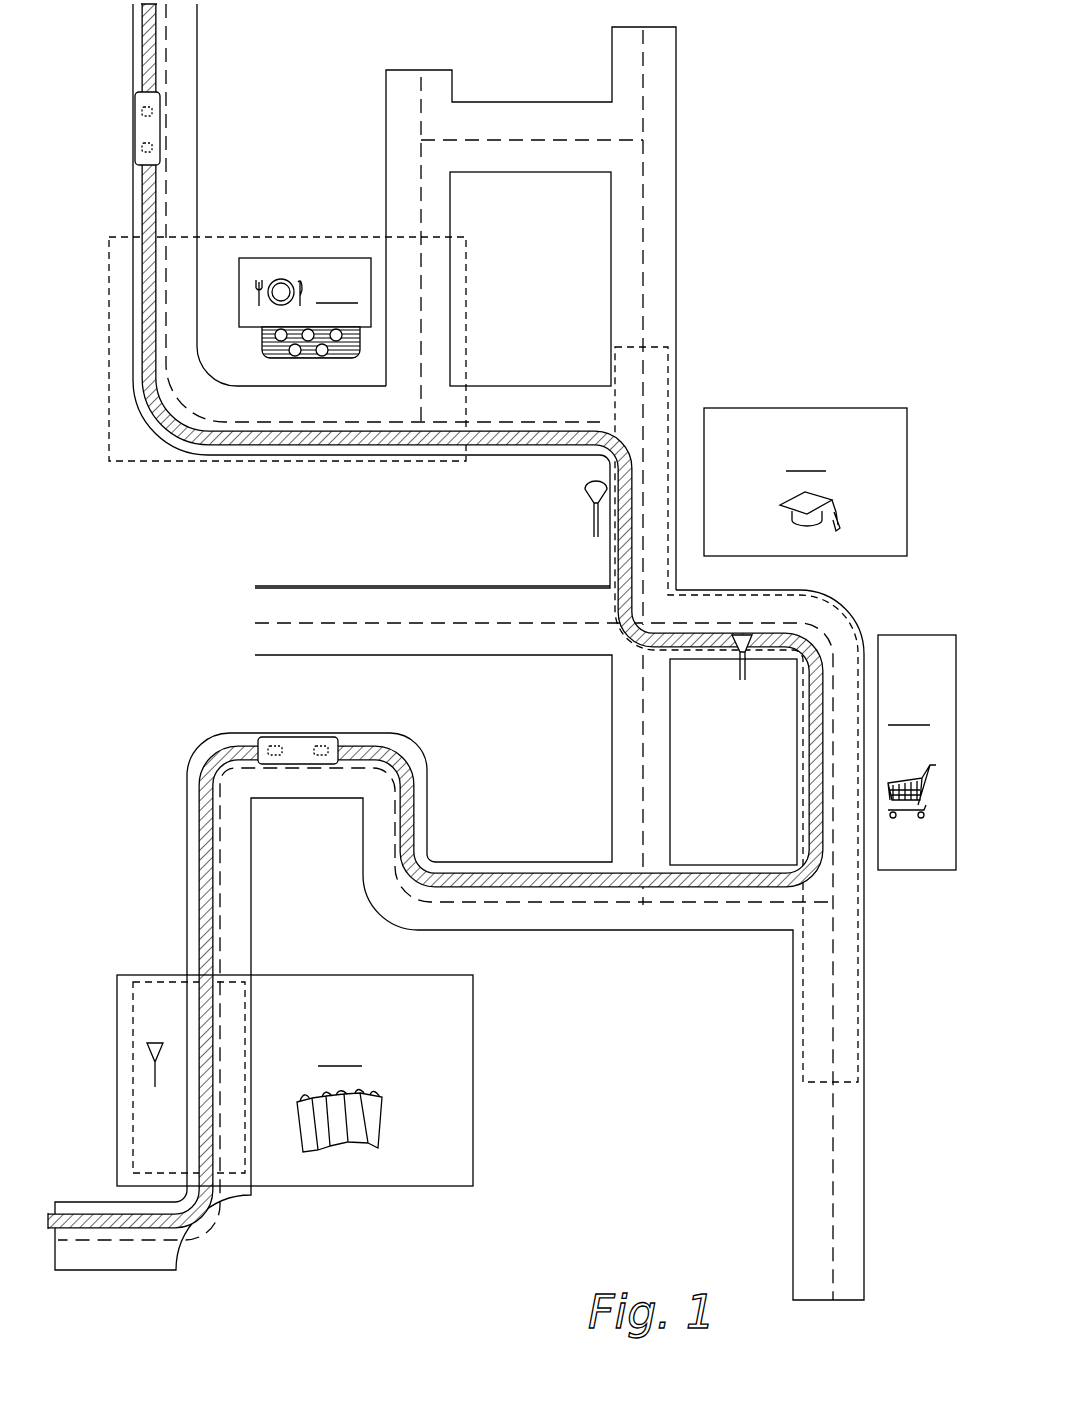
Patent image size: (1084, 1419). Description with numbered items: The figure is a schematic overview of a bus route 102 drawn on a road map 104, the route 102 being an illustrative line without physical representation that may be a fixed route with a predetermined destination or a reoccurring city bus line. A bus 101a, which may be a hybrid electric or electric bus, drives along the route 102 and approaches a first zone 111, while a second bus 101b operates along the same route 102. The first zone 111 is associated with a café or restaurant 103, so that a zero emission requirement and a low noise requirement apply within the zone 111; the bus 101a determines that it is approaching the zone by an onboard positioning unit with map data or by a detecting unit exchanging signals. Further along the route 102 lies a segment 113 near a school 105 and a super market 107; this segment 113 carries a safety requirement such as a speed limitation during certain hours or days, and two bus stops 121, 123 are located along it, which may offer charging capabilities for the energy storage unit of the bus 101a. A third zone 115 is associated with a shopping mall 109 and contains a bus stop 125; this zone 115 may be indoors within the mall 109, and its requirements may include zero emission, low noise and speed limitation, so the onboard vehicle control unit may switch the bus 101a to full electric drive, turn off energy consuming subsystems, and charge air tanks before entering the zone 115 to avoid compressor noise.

The bus 101a is at (143, 125).
The second bus 101b is at (322, 745).
The bus route 102 is at (147, 207).
The café or restaurant 103 is at (305, 308).
The road map 104 is at (436, 85).
The school 105 is at (805, 482).
The super market 107 is at (917, 752).
The shopping mall 109 is at (295, 1080).
The first zone 111 is at (150, 461).
The segment 113 is at (672, 357).
The third zone 115 is at (247, 997).
The bus stop 121 is at (588, 492).
The bus stop 123 is at (742, 680).
The bus stop 125 is at (148, 1050).